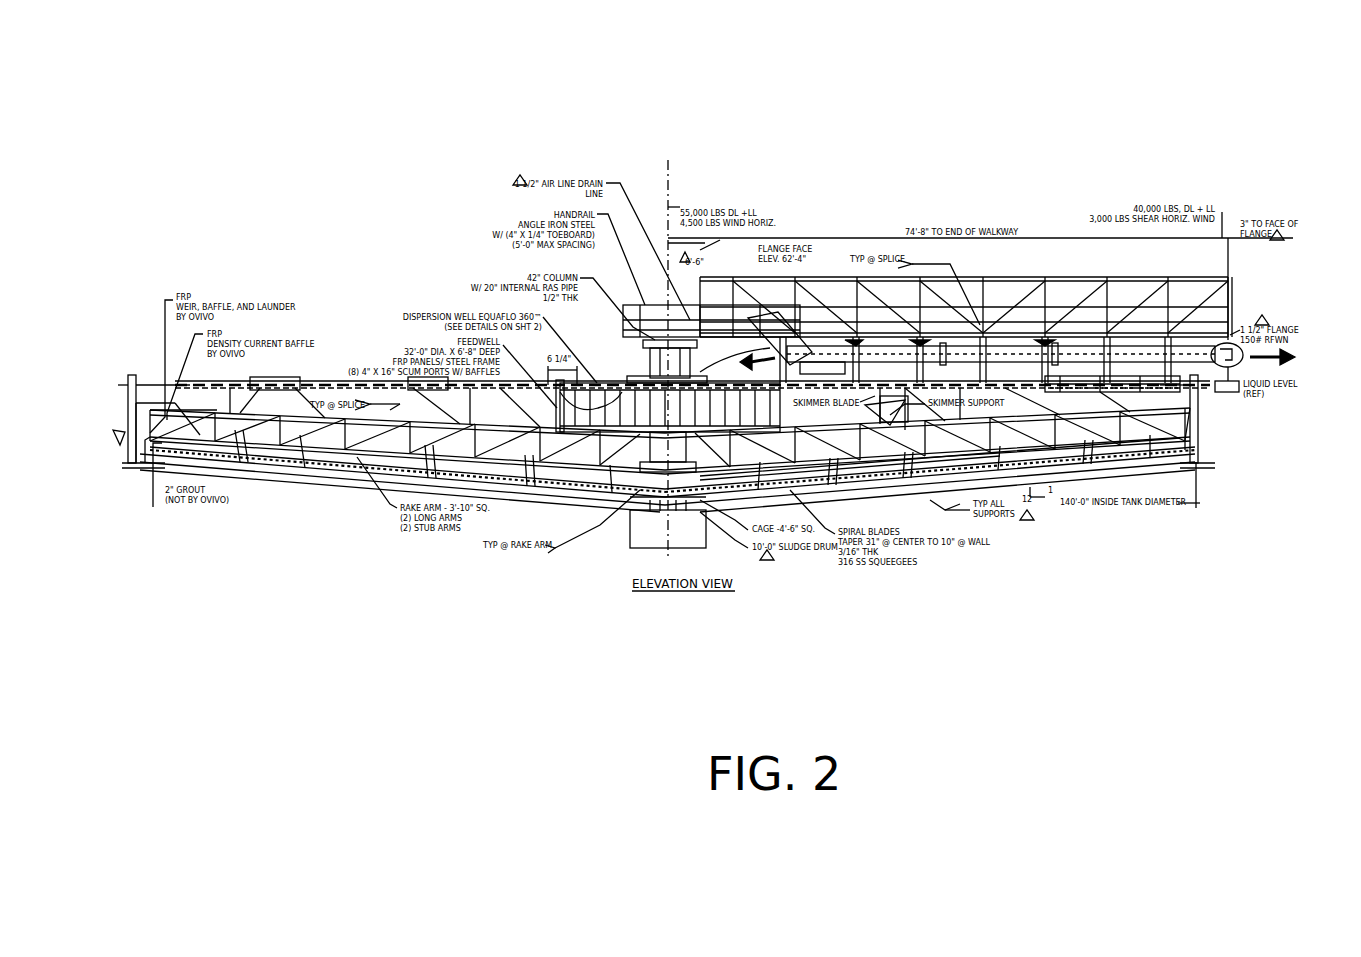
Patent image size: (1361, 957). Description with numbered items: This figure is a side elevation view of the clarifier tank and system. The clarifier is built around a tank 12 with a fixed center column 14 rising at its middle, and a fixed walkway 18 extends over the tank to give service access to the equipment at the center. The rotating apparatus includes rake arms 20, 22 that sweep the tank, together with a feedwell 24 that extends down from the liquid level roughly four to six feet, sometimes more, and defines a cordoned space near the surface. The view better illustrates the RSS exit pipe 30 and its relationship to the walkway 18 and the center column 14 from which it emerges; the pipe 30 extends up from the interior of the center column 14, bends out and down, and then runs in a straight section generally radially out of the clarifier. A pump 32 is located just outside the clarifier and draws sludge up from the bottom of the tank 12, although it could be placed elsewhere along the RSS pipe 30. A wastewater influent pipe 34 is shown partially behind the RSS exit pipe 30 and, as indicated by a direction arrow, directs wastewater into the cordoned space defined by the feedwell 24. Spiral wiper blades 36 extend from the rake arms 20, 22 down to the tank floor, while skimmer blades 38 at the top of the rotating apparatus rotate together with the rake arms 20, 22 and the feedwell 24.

The tank 12 is at (118, 438).
The center column 14 is at (655, 356).
The fixed walkway 18 is at (1016, 275).
The rake arm 20 is at (987, 453).
The rake arm 22 is at (353, 447).
The feedwell 24 is at (547, 400).
The RSS exit pipe 30 is at (705, 330).
The pump 32 is at (1228, 357).
The wastewater influent pipe 34 is at (873, 367).
The spiral wiper blades 36 is at (300, 466).
The skimmer blades 38 is at (337, 387).